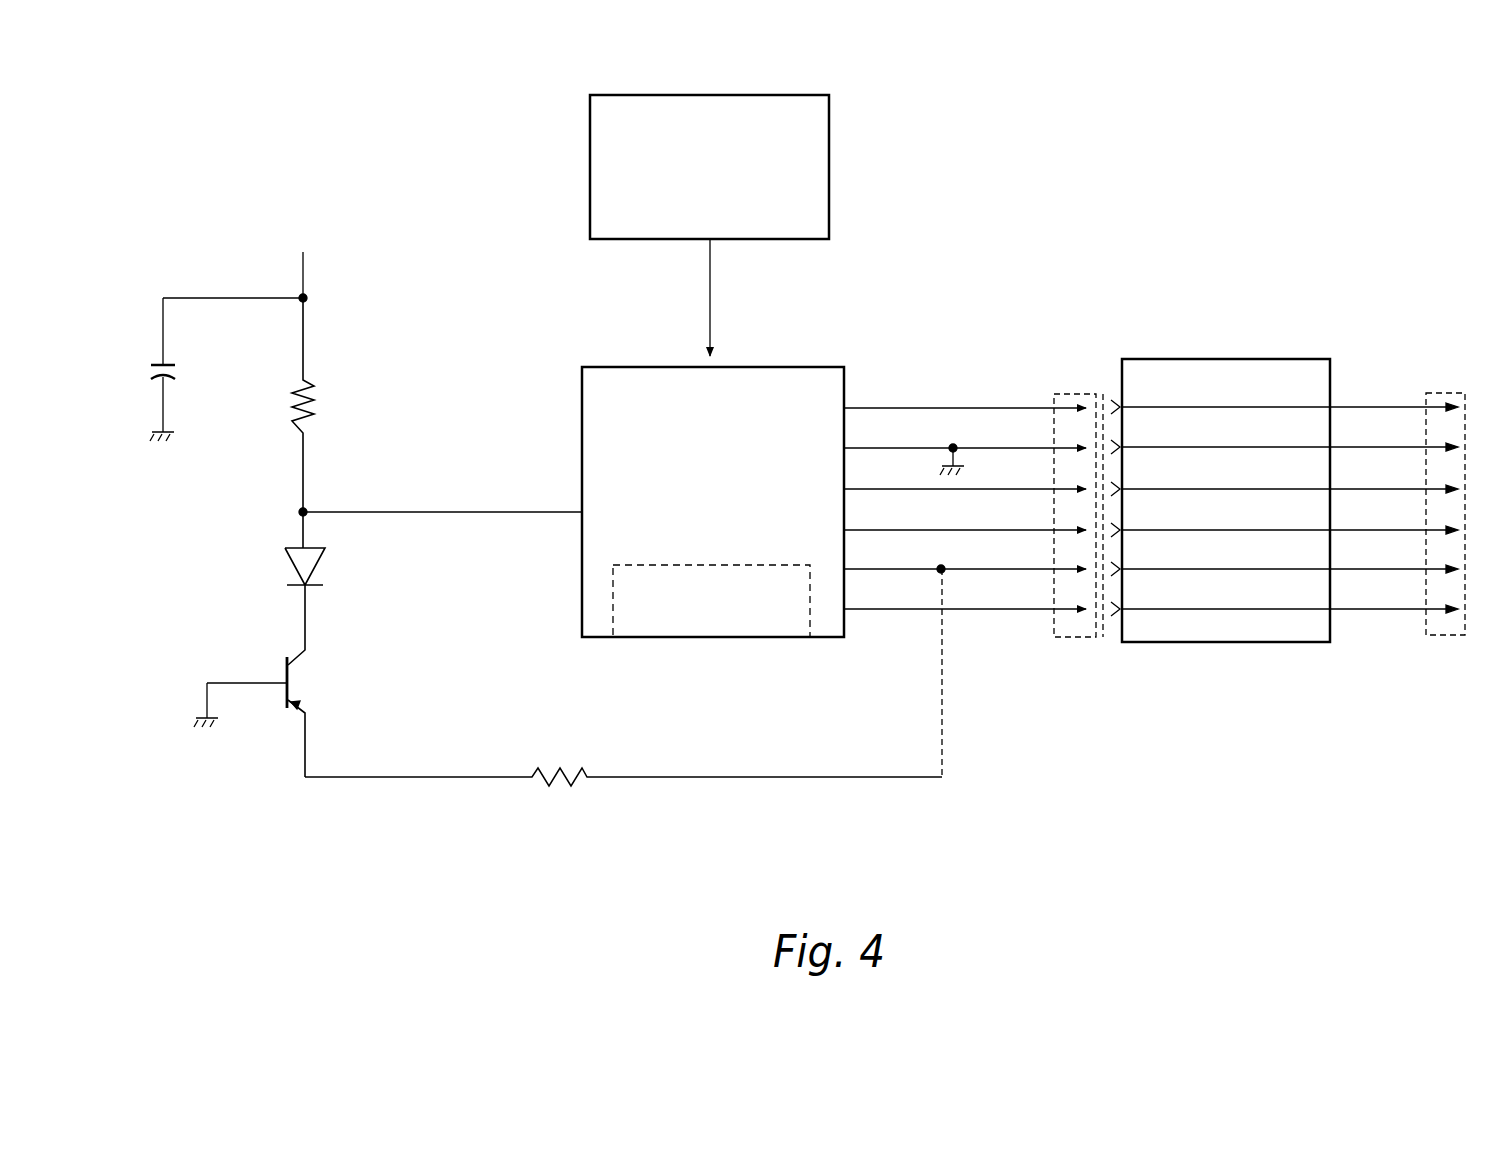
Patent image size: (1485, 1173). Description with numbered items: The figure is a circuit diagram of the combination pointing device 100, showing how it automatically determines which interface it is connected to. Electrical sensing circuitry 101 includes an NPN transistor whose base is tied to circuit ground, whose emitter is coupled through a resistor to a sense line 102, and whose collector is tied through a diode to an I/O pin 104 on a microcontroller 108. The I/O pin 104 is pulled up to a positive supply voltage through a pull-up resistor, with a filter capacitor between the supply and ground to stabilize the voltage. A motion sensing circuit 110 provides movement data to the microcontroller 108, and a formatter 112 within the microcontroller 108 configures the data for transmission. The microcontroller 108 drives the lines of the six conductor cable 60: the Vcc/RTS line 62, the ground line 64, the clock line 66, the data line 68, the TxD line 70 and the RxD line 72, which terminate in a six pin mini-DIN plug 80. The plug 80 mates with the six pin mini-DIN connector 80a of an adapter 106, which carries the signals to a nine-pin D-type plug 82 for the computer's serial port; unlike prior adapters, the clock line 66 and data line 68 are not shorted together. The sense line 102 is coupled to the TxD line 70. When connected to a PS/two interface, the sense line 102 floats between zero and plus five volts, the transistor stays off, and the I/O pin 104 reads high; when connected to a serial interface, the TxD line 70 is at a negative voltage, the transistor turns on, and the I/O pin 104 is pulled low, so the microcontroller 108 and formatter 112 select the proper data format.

The six conductor cable 60 is at (916, 336).
The Vcc/RTS line 62 is at (982, 408).
The ground (GND) line 64 is at (985, 448).
The clock (CLK) line 66 is at (987, 489).
The data line 68 is at (990, 530).
The TxD line 70 is at (995, 569).
The RxD line 72 is at (998, 609).
The six pin mini-DIN plug 80 is at (1072, 640).
The six pin mini-DIN connector 80a is at (1108, 640).
The DB-9 plug 82 is at (1445, 638).
The combination pointing device 100 is at (1192, 848).
The electrical sensing circuitry 101 is at (266, 754).
The sense line 102 is at (848, 780).
The I/O pin 104 is at (448, 511).
The adapter 106 is at (1215, 645).
The microcontroller 108 is at (582, 397).
The motion sensing circuit 110 is at (829, 140).
The formatter 112 is at (712, 622).